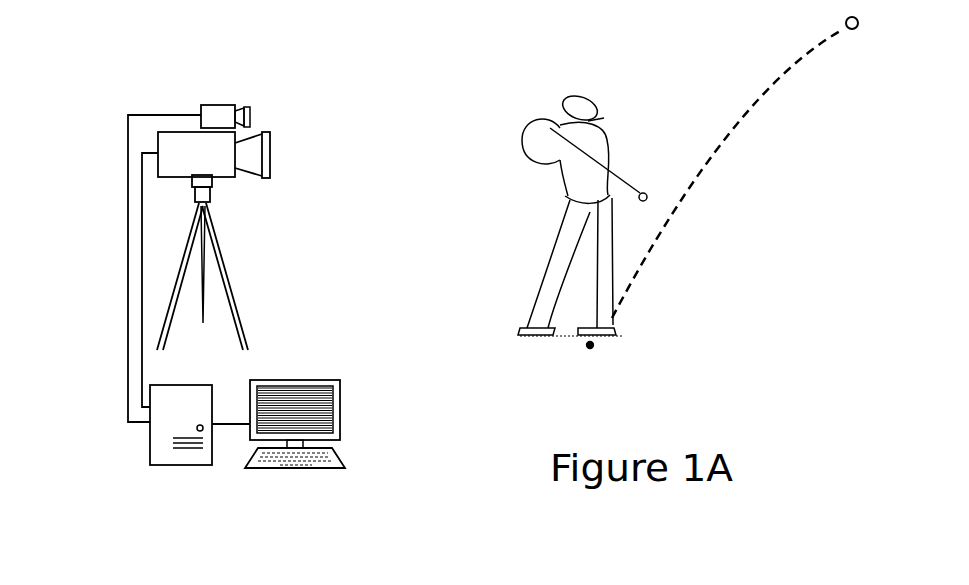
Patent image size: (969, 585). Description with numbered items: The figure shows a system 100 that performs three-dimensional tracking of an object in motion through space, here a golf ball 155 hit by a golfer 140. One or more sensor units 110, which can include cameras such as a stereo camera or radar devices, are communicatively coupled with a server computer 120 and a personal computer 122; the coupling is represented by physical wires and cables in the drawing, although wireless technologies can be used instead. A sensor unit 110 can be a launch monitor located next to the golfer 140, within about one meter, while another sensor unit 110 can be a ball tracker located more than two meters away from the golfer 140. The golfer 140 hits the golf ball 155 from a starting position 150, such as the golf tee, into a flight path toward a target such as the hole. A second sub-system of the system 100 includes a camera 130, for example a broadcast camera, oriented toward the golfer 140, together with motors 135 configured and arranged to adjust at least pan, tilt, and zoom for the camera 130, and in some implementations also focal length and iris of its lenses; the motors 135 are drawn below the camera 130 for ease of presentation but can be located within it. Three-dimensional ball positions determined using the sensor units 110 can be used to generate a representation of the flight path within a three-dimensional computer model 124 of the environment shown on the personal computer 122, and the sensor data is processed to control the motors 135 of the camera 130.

The system 100 is at (146, 32).
The sensor unit 110 is at (218, 105).
The server computer 120 is at (185, 465).
The personal computer 122 is at (318, 468).
The 3D computer model 124 is at (330, 405).
The camera 130 is at (225, 177).
The motors 135 is at (213, 187).
The golfer 140 is at (503, 108).
The starting position 150 is at (592, 348).
The golf ball 155 is at (846, 20).